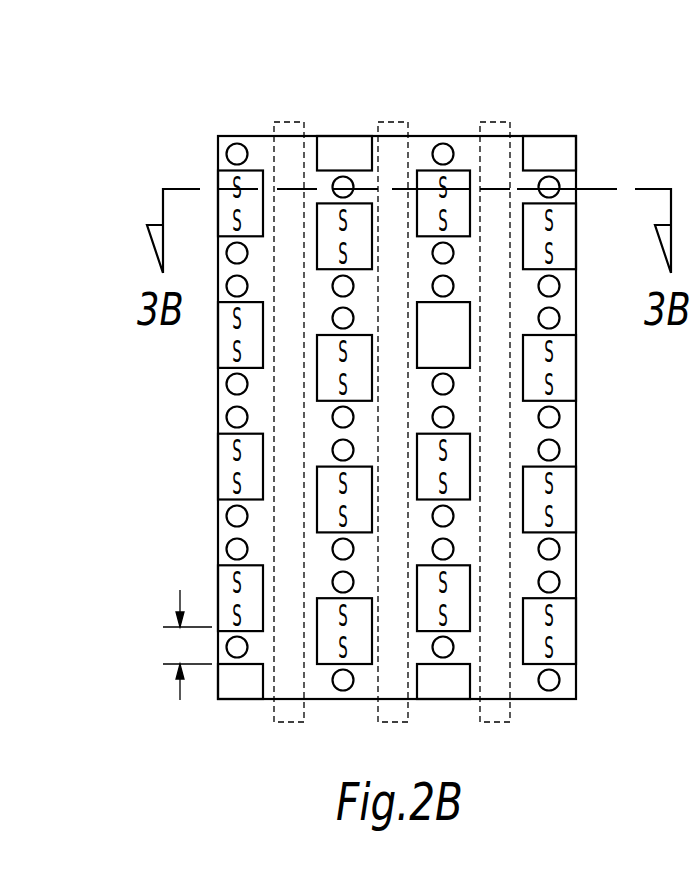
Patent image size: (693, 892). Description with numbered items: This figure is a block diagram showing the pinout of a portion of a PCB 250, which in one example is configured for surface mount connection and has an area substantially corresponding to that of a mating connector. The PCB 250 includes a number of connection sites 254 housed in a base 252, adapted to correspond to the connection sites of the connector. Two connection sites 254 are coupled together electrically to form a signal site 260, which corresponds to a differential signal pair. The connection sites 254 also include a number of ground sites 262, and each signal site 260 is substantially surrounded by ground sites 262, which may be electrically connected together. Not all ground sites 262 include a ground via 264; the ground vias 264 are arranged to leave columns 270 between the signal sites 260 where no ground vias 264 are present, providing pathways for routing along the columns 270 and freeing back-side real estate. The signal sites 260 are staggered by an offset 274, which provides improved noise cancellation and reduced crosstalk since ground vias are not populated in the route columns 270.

The PCB 250 is at (201, 95).
The base 252 is at (230, 535).
The connection sites 254 is at (283, 357).
The signal site 260 is at (458, 330).
The ground sites 262 is at (501, 288).
The ground vias 264 is at (453, 383).
The columns 270 is at (289, 116).
The offset 274 is at (180, 591).